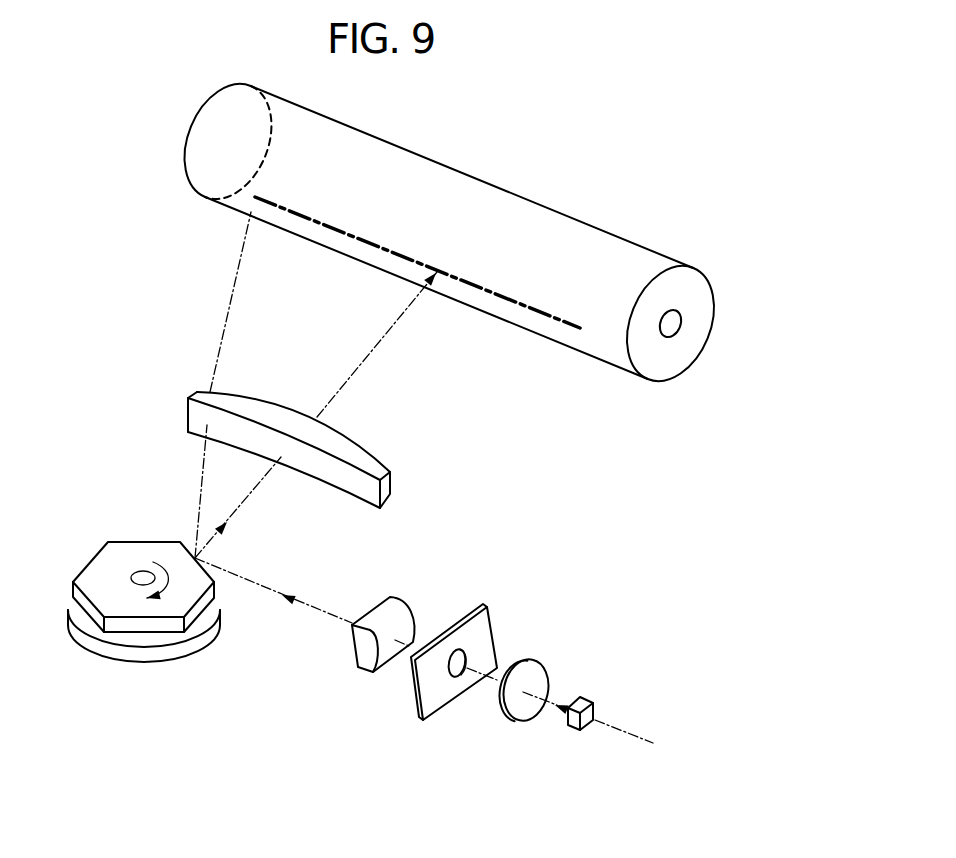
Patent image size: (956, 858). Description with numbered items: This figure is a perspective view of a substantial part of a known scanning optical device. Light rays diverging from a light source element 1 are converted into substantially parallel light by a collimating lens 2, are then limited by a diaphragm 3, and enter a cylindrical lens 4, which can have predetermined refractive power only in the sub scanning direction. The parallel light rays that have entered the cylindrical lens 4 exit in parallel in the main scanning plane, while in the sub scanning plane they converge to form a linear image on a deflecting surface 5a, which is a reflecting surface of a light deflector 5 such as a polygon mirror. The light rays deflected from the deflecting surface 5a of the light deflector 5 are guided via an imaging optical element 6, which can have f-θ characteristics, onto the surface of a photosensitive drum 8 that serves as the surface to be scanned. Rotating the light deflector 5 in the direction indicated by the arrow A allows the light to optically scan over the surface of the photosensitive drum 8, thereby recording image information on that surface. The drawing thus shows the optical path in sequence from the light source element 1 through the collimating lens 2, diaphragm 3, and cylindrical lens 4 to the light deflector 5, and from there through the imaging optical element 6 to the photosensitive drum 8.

The light source element 1 is at (570, 728).
The collimating lens 2 is at (517, 720).
The diaphragm 3 is at (425, 685).
The cylindrical lens 4 is at (365, 652).
The light deflector 5 is at (107, 575).
The deflecting surface 5a is at (197, 637).
The arrow A is at (165, 593).
The imaging optical element 6 is at (253, 402).
The photosensitive drum 8 is at (574, 349).